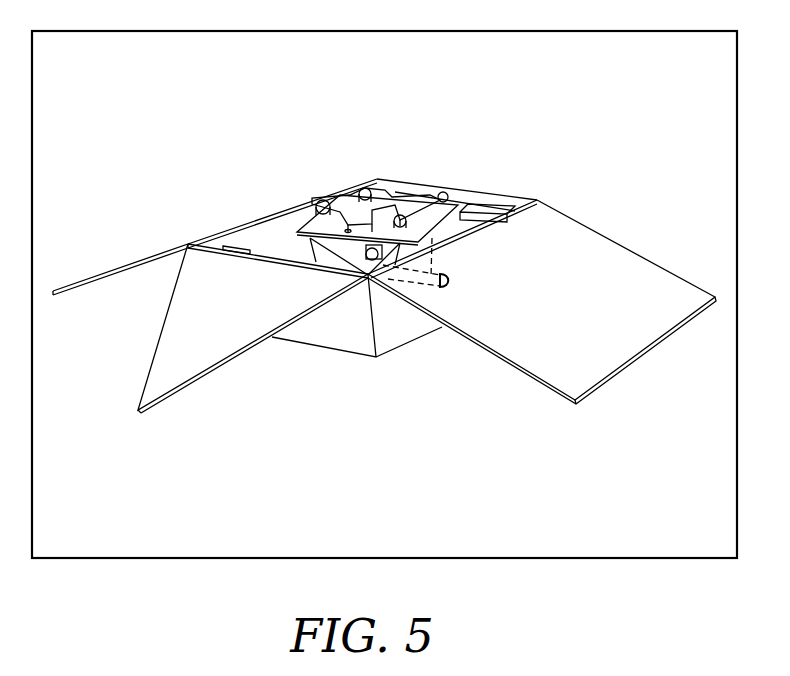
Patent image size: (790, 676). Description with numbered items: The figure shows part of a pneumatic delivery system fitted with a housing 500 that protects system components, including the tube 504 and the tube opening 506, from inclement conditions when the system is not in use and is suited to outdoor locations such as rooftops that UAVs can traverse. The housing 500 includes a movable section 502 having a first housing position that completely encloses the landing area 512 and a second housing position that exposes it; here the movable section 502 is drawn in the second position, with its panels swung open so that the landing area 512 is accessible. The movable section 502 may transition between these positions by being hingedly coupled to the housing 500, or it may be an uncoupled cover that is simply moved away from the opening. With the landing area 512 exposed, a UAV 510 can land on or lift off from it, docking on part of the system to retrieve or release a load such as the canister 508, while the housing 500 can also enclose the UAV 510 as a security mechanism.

The housing 500 is at (474, 452).
The movable section 502 is at (172, 345).
The tube 504 is at (433, 238).
The tube opening 506 is at (373, 278).
The canister 508 is at (383, 200).
The UAV 510 is at (362, 199).
The landing area 512 is at (328, 234).